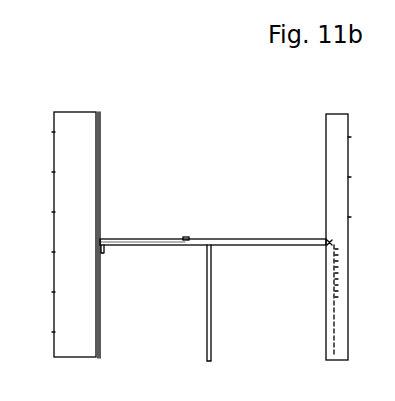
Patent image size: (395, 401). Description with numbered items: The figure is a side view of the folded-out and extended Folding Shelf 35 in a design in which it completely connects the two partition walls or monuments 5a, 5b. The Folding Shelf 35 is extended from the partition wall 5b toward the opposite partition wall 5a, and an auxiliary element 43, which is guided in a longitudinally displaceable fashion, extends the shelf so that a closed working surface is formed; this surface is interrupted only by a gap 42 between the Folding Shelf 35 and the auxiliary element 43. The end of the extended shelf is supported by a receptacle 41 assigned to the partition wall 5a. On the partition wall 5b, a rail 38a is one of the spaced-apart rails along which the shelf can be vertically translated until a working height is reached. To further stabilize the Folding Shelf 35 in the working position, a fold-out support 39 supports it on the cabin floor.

The partition wall 5a is at (100, 151).
The partition wall 5b is at (326, 133).
The Folding Shelf 35 is at (247, 240).
The auxiliary element 43 is at (150, 238).
The gap 42 is at (186, 240).
The receptacle 41 is at (104, 254).
The fold-out support 39 is at (207, 333).
The rail 38a is at (334, 320).